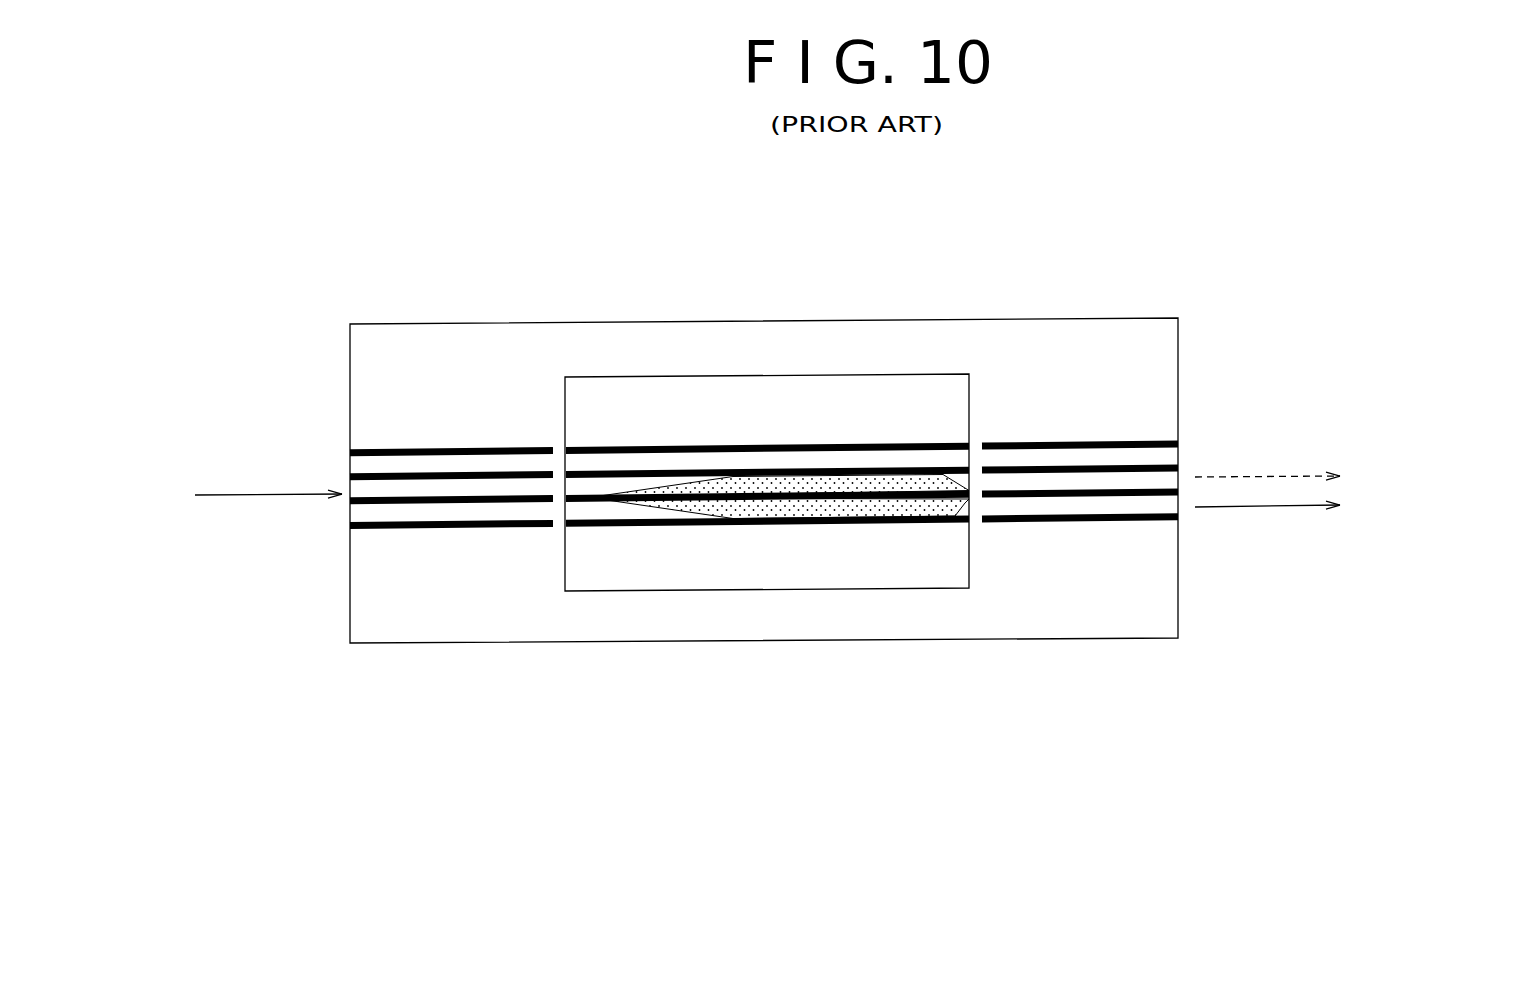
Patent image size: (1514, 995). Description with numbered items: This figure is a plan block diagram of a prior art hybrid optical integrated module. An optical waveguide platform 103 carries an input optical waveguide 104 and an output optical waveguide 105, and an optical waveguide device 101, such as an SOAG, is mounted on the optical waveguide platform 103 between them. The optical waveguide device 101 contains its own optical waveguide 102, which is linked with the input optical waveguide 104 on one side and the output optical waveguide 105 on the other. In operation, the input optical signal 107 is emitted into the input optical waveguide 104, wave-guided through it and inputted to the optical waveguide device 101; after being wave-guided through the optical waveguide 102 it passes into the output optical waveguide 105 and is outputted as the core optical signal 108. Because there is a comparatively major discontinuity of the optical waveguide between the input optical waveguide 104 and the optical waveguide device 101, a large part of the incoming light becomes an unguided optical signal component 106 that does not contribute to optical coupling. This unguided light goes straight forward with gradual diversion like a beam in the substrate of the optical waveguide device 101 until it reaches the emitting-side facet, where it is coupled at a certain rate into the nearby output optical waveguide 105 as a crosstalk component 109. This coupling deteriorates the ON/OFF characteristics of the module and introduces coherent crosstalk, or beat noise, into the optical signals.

The optical waveguide device 101 is at (645, 377).
The optical waveguide 102 is at (815, 405).
The optical waveguide platform 103 is at (372, 316).
The input optical waveguide 104 is at (460, 443).
The output optical waveguide 105 is at (1127, 372).
The unguided optical signal component 106 is at (825, 507).
The input optical signal 107 is at (242, 534).
The core optical signal 108 is at (1262, 507).
The crosstalk component 109 is at (1277, 447).